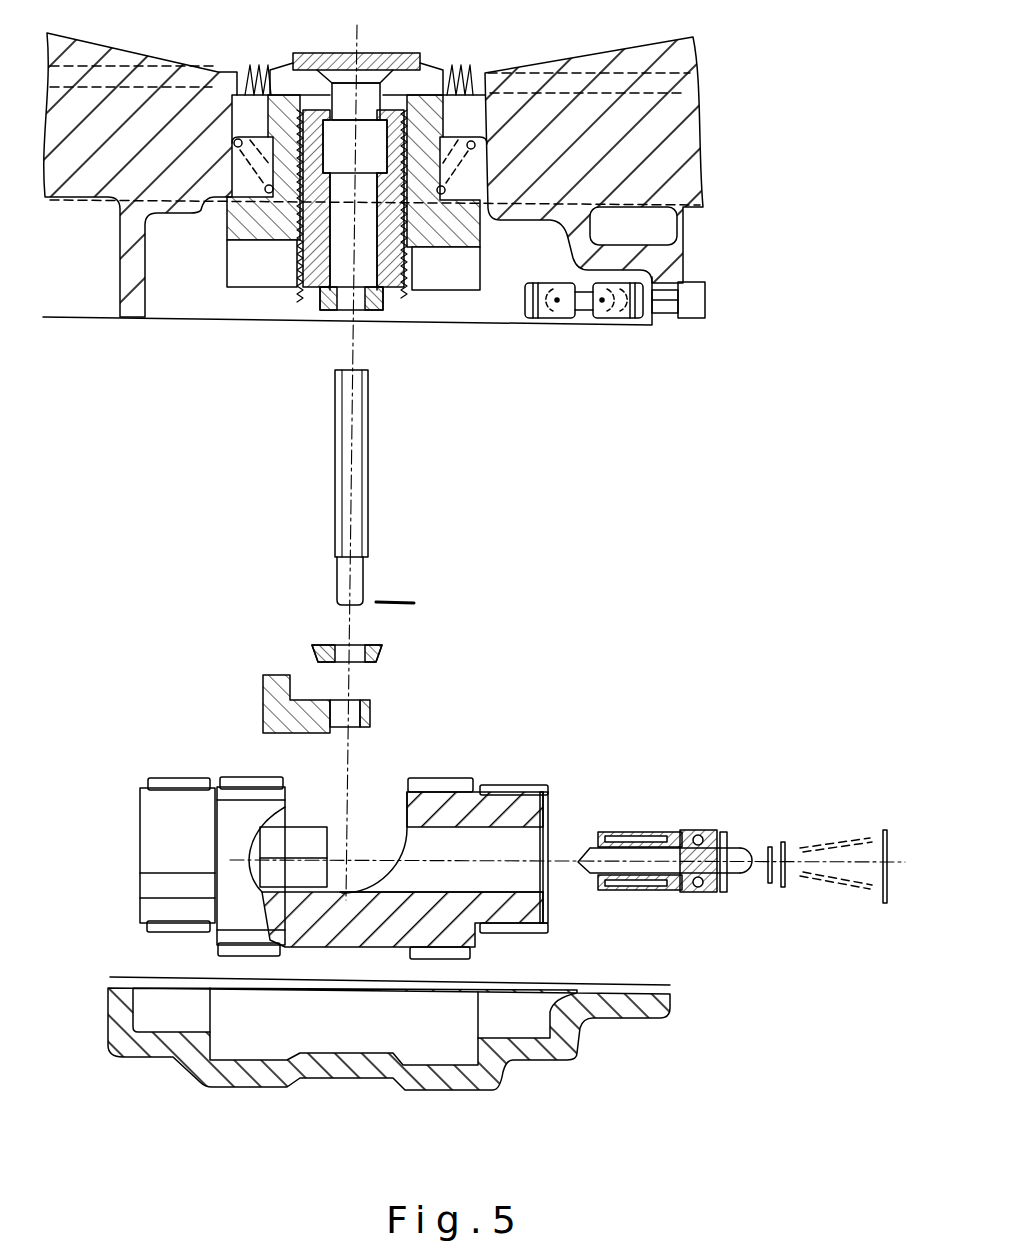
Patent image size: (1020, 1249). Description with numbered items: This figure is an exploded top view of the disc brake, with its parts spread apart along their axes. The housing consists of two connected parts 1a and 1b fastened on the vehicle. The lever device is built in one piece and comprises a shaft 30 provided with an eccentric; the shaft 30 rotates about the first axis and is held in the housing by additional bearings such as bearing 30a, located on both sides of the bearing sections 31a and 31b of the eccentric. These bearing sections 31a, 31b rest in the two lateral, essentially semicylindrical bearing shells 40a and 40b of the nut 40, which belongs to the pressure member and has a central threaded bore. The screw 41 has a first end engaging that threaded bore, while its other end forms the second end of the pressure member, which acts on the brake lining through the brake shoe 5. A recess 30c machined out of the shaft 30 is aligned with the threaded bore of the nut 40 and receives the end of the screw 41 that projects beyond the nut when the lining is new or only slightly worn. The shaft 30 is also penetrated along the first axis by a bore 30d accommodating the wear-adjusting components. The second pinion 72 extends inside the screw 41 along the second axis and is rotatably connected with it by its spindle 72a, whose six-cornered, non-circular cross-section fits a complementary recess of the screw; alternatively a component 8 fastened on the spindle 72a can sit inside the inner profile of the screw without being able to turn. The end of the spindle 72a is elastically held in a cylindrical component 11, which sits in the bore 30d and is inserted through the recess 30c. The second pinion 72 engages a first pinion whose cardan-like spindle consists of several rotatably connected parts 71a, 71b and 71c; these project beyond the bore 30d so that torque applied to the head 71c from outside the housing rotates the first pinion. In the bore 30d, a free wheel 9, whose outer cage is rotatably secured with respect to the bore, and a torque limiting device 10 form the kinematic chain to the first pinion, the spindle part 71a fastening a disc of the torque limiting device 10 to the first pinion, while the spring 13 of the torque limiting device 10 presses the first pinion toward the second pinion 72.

The housing part 1a is at (106, 325).
The housing part 1b is at (140, 1058).
The brake shoe 5 is at (385, 57).
The fastened component 8 is at (328, 300).
The free wheel 9 is at (652, 822).
The torque limiting device 10 is at (711, 822).
The cylindrical component 11 is at (263, 693).
The spring 13 is at (837, 830).
The shaft 30 is at (131, 898).
The additional bearing 30a is at (172, 778).
The recess 30c is at (363, 828).
The bore 30d is at (517, 881).
The bearing section 31a is at (243, 777).
The bearing section 31b is at (440, 783).
The nut 40 is at (487, 167).
The bearing shell 40a is at (237, 230).
The bearing shell 40b is at (467, 230).
The screw 41 is at (408, 285).
The spindle part 71a is at (707, 872).
The spindle part 71b is at (583, 305).
The head 71c is at (700, 297).
The second pinion 72 is at (378, 656).
The spindle 72a is at (358, 479).